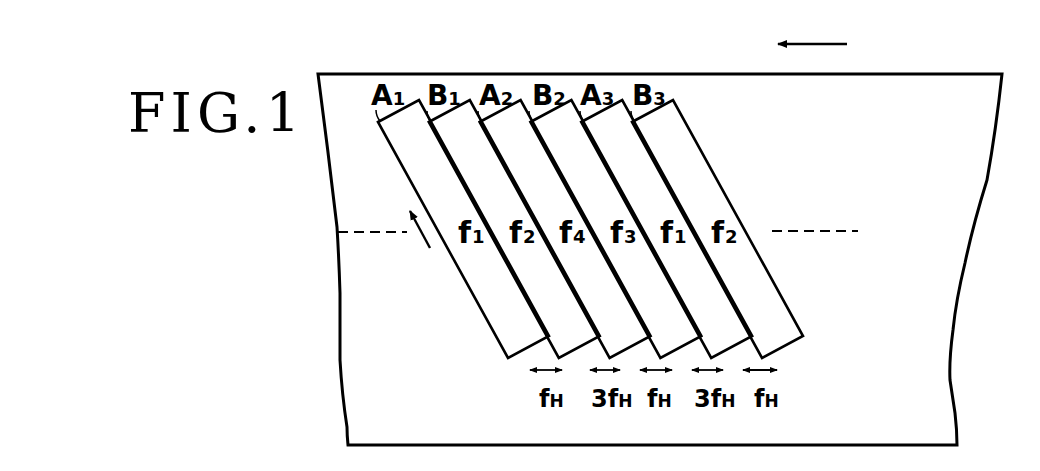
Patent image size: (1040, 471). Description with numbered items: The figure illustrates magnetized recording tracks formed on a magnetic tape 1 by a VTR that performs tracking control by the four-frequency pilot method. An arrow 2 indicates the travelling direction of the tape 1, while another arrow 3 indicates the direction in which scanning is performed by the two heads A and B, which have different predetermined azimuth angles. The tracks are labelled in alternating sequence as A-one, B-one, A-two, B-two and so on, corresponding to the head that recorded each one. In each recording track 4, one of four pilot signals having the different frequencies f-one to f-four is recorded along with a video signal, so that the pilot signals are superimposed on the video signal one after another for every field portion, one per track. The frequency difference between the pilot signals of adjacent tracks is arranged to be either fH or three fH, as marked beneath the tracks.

The magnetic tape 1 is at (880, 82).
The arrow 2 is at (847, 44).
The arrow 3 is at (423, 241).
The recording track 4 is at (702, 153).